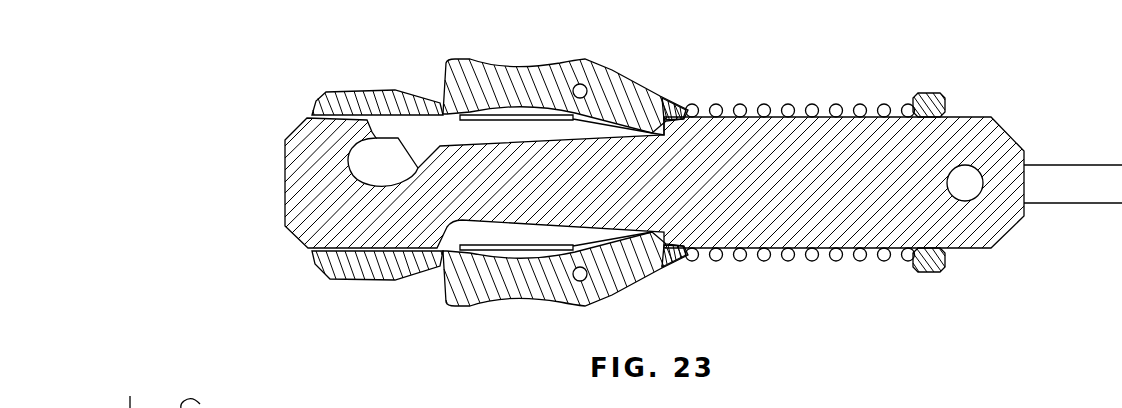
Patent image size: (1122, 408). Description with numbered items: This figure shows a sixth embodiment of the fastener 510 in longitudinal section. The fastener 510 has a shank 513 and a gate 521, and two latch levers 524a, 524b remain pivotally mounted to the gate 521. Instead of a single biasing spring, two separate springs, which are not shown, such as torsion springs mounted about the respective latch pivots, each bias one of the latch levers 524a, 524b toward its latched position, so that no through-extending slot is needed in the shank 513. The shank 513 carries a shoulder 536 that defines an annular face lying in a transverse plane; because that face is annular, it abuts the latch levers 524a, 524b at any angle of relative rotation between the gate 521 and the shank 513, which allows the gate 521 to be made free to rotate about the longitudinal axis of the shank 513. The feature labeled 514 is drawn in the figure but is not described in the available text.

The fastener 510 is at (282, 315).
The shank 513 is at (837, 133).
The ledge 514 is at (656, 122).
The gate 521 is at (362, 96).
The latch lever 524a is at (513, 68).
The latch lever 524b is at (527, 290).
The shoulder 536 is at (670, 100).